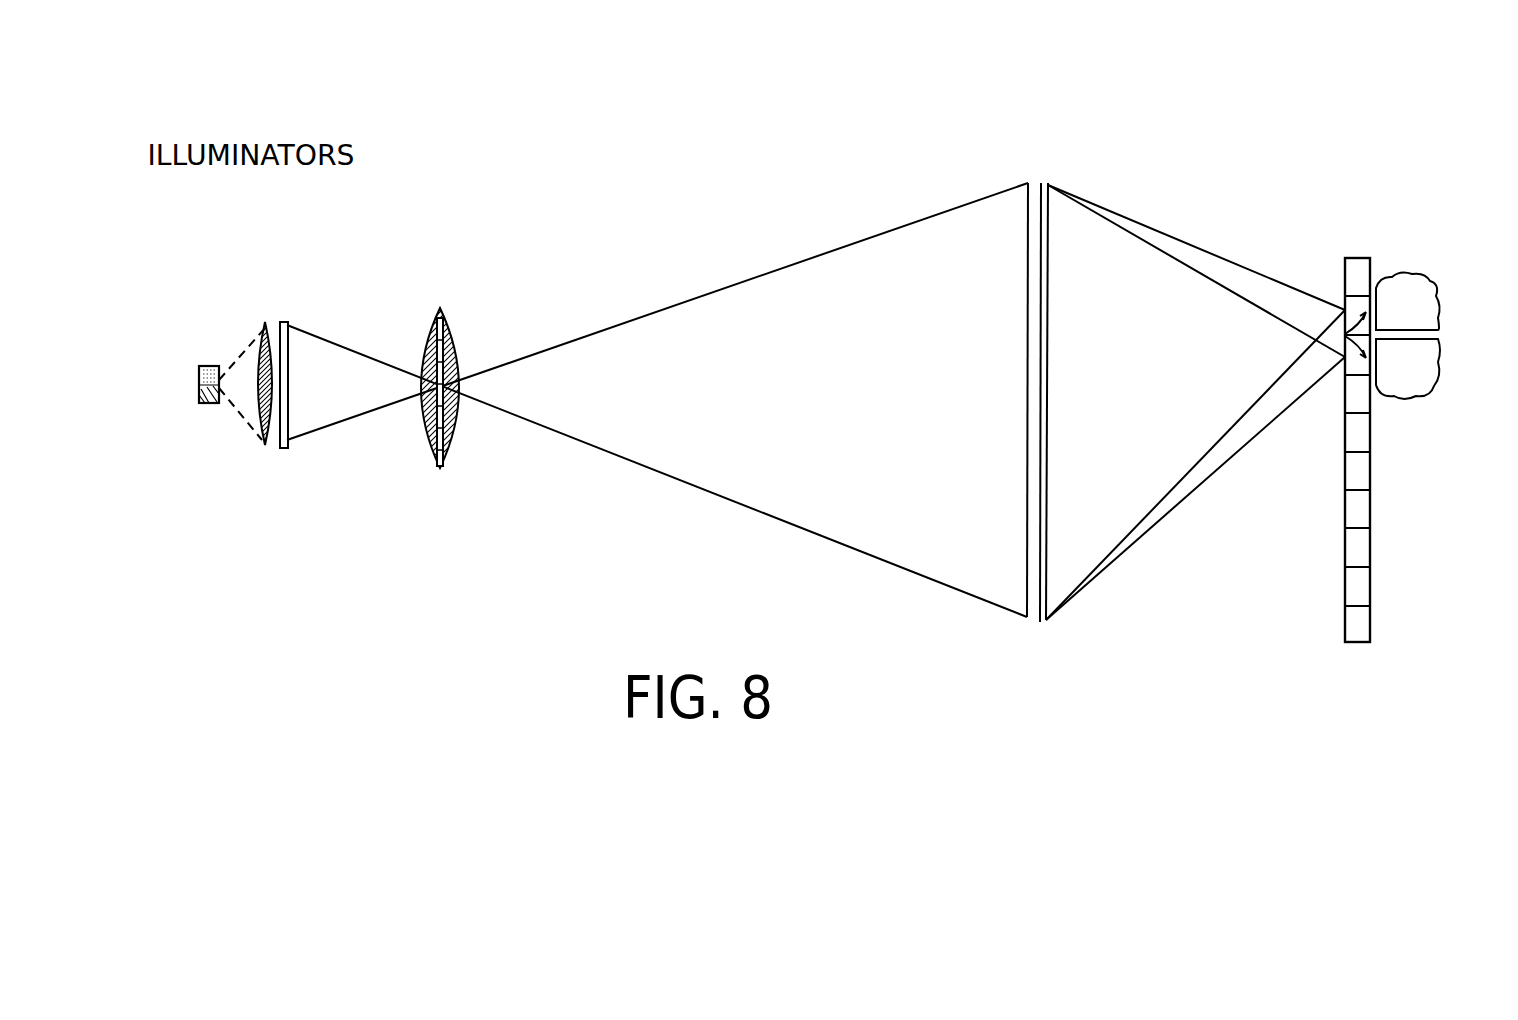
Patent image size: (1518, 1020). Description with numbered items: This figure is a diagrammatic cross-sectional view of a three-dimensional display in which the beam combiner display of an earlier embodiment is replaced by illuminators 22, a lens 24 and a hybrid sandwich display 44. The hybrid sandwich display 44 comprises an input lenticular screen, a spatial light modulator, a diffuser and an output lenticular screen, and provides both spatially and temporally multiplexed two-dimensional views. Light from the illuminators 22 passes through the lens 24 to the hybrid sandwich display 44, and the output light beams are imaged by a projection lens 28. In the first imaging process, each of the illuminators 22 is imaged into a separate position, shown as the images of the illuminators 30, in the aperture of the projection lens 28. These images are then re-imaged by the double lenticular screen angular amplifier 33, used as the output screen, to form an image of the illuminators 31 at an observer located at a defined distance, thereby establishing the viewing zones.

The illuminators 22 is at (208, 366).
The lens 24 is at (262, 445).
The hybrid sandwich display 44 is at (283, 322).
The projection lens 28 is at (440, 308).
The images of illuminators 30 is at (444, 462).
The double lenticular screen angular amplifier 33 is at (1037, 178).
The image of the illuminators 31 is at (1360, 265).